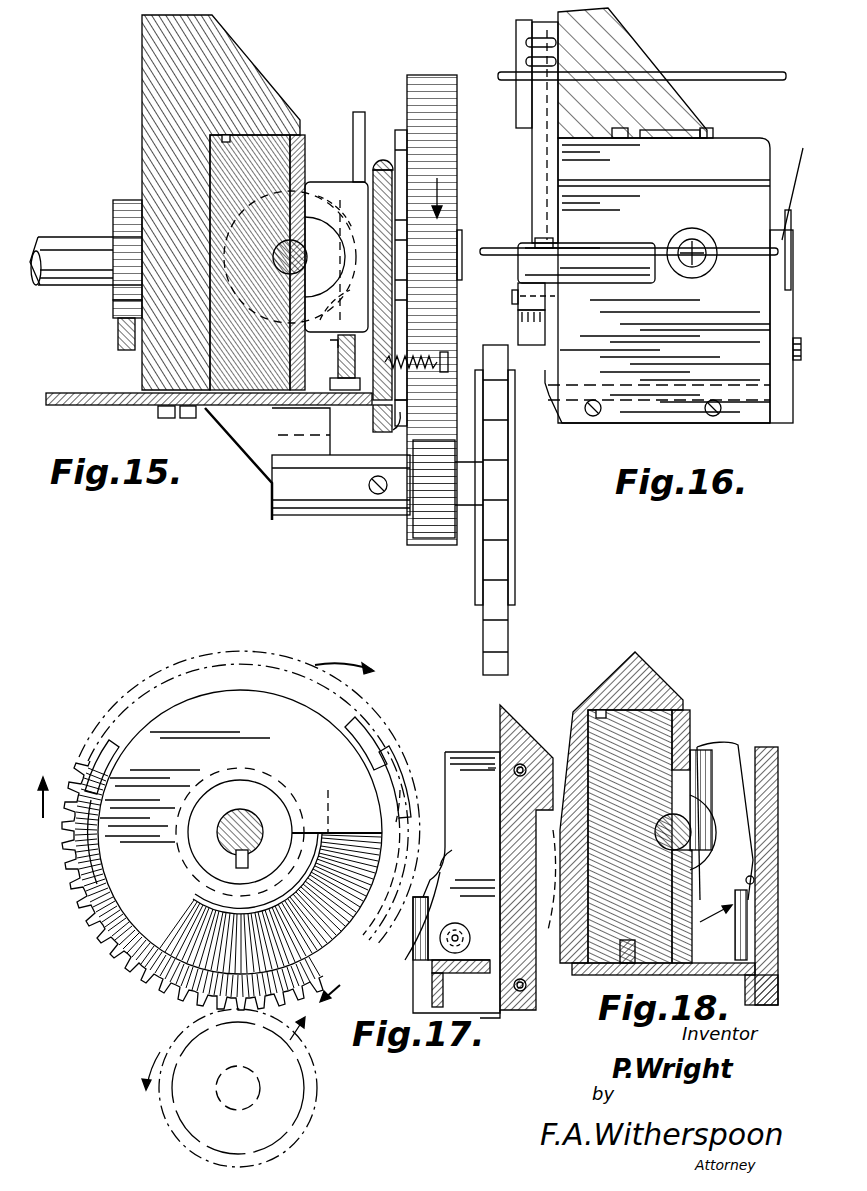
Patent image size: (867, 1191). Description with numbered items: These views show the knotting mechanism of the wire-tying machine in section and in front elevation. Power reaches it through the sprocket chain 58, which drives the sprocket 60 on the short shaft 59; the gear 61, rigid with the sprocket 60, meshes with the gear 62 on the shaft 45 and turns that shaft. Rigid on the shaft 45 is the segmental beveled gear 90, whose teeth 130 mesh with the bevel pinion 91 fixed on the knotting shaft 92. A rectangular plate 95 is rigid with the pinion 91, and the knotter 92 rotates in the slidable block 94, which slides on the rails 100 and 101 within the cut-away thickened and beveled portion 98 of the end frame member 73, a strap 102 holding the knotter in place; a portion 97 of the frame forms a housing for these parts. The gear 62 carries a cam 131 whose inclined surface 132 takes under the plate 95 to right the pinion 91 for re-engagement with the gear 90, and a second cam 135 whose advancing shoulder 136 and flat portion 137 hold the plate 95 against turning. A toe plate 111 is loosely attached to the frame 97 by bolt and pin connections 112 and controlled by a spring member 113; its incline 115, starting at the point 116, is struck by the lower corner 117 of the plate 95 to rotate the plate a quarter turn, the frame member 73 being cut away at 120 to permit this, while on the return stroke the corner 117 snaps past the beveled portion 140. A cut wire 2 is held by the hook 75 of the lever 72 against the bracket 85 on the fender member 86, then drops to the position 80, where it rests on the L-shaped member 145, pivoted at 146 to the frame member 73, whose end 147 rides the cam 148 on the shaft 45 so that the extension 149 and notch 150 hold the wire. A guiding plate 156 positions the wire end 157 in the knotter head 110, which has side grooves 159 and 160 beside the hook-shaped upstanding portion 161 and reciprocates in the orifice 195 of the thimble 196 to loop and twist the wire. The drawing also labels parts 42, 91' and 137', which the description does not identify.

In FIG. 16, the wire 2 is at (508, 80).
In FIG. 15, the base plate 42 is at (86, 405).
In FIG. 16, the base plate 42 is at (543, 390).
In FIG. 18, the base plate 42 is at (582, 973).
In FIG. 15, the shaft 45 is at (80, 237).
In FIG. 17, the shaft 45 is at (250, 810).
In FIG. 15, the sprocket chain 58 is at (508, 634).
In FIG. 15, the short shaft 59 is at (330, 508).
In FIG. 17, the short shaft 59 is at (262, 1089).
In FIG. 15, the sprocket 60 is at (515, 572).
In FIG. 15, the gear 61 is at (437, 540).
In FIG. 17, the gear 61 is at (162, 1108).
In FIG. 15, the gear 62 is at (430, 96).
In FIG. 17, the gear 62 is at (140, 979).
In FIG. 16, the lever 72 is at (516, 113).
In FIG. 15, the end frame member 73 is at (142, 52).
In FIG. 16, the end frame member 73 is at (598, 33).
In FIG. 18, the end frame member 73 is at (645, 673).
In FIG. 16, the hook-like projection 75 is at (522, 70).
In FIG. 16, the wire position 80 is at (505, 250).
In FIG. 16, the lug or bracket 85 is at (526, 43).
In FIG. 16, the fender member 86 is at (532, 139).
In FIG. 15, the segmental beveled gear 90 is at (338, 362).
In FIG. 17, the segmental beveled gear 90 is at (150, 716).
In FIG. 17, the bevel pinion 91 is at (279, 827).
In FIG. 18, the bevel pinion 91 is at (704, 788).
In FIG. 15, the cut-out 91' is at (321, 350).
In FIG. 15, the knotting shaft 92 is at (306, 246).
In FIG. 18, the knotting shaft 92 is at (688, 797).
In FIG. 15, the slidable block 94 is at (250, 440).
In FIG. 16, the slidable block 94 is at (704, 130).
In FIG. 15, the rectangular plate 95 is at (340, 190).
In FIG. 17, the rectangular plate 95 is at (395, 913).
In FIG. 18, the rectangular plate 95 is at (742, 750).
In FIG. 16, the frame housing 97 is at (757, 160).
In FIG. 18, the frame housing 97 is at (532, 842).
In FIG. 15, the beveled thickened portion 98 is at (250, 108).
In FIG. 16, the beveled thickened portion 98 is at (646, 58).
In FIG. 15, the rail 100 is at (207, 420).
In FIG. 18, the rail 100 is at (636, 972).
In FIG. 15, the rail 101 is at (232, 138).
In FIG. 16, the rail 101 is at (648, 136).
In FIG. 18, the rail 101 is at (602, 712).
In FIG. 15, the strap 102 is at (305, 146).
In FIG. 16, the strap 102 is at (713, 135).
In FIG. 18, the strap 102 is at (688, 722).
In FIG. 16, the knotter head 110 is at (700, 276).
In FIG. 15, the toe plate member 111 is at (395, 432).
In FIG. 16, the toe plate member 111 is at (775, 318).
In FIG. 17, the toe plate member 111 is at (478, 759).
In FIG. 18, the toe plate member 111 is at (770, 918).
In FIG. 17, the bolt and pin connections 112 is at (500, 768).
In FIG. 18, the bolt and pin connections 112 is at (528, 985).
In FIG. 15, the spring controlled member 113 is at (452, 354).
In FIG. 16, the spring controlled member 113 is at (793, 346).
In FIG. 17, the inclined portion 115 is at (442, 862).
In FIG. 18, the inclined portion 115 is at (756, 884).
In FIG. 17, the starting point of incline 116 is at (407, 958).
In FIG. 18, the starting point of incline 116 is at (730, 916).
In FIG. 17, the lower edge 117 is at (388, 933).
In FIG. 18, the lower edge 117 is at (760, 901).
In FIG. 18, the cut-away 120 is at (556, 918).
In FIG. 17, the teeth 130 is at (303, 903).
In FIG. 15, the cam 131 is at (378, 170).
In FIG. 17, the cam 131 is at (92, 870).
In FIG. 15, the inclined surface 132 is at (400, 160).
In FIG. 17, the inclined surface 132 is at (92, 776).
In FIG. 15, the cam 135 is at (400, 425).
In FIG. 17, the cam 135 is at (366, 733).
In FIG. 17, the advancing shoulder 136 is at (403, 806).
In FIG. 17, the flat portion 137 is at (409, 775).
In FIG. 15, the pawl tip 137' is at (360, 423).
In FIG. 15, the beveled portion 140 is at (332, 386).
In FIG. 17, the beveled portion 140 is at (462, 926).
In FIG. 18, the beveled portion 140 is at (740, 930).
In FIG. 15, the L-shaped member 145 is at (118, 333).
In FIG. 16, the L-shaped member 145 is at (518, 288).
In FIG. 16, the pivot 146 is at (512, 298).
In FIG. 15, the end of supporting member 147 is at (113, 312).
In FIG. 16, the end of supporting member 147 is at (526, 334).
In FIG. 15, the cam 148 is at (113, 216).
In FIG. 16, the right angled extension 149 is at (598, 285).
In FIG. 16, the notch 150 is at (534, 240).
In FIG. 16, the guiding plate 156 is at (803, 165).
In FIG. 16, the end portion of wire 157 is at (735, 255).
In FIG. 16, the side groove 159 is at (674, 283).
In FIG. 16, the side groove 160 is at (714, 266).
In FIG. 16, the upstanding portion 161 is at (695, 233).
In FIG. 16, the orifice 195 is at (742, 241).
In FIG. 16, the thimble 196 is at (672, 238).